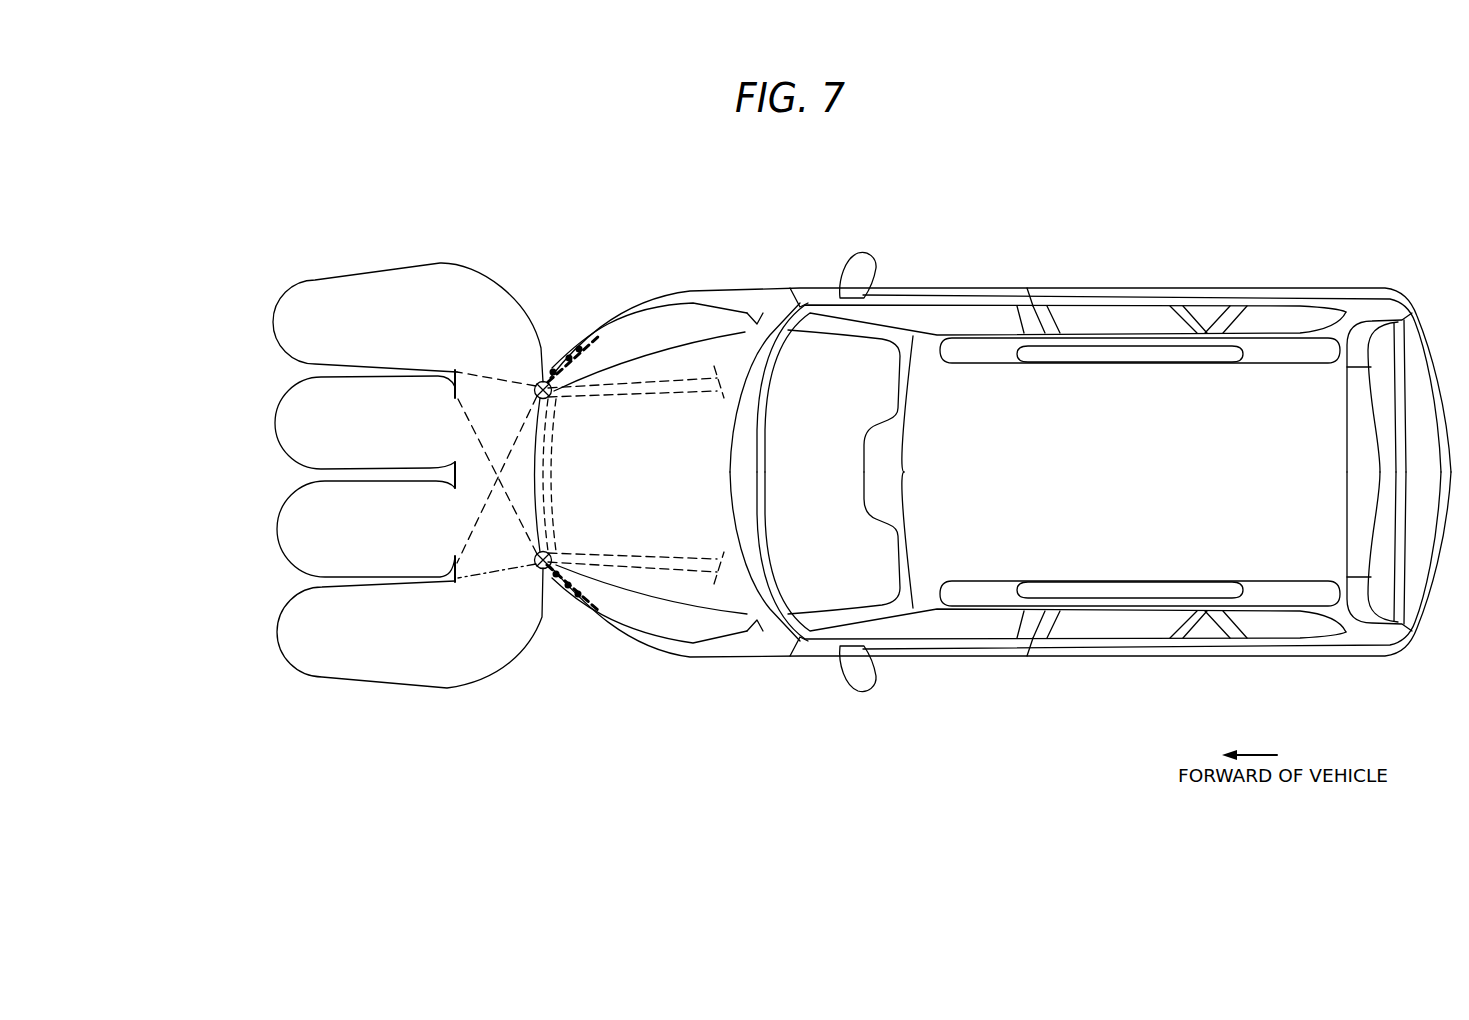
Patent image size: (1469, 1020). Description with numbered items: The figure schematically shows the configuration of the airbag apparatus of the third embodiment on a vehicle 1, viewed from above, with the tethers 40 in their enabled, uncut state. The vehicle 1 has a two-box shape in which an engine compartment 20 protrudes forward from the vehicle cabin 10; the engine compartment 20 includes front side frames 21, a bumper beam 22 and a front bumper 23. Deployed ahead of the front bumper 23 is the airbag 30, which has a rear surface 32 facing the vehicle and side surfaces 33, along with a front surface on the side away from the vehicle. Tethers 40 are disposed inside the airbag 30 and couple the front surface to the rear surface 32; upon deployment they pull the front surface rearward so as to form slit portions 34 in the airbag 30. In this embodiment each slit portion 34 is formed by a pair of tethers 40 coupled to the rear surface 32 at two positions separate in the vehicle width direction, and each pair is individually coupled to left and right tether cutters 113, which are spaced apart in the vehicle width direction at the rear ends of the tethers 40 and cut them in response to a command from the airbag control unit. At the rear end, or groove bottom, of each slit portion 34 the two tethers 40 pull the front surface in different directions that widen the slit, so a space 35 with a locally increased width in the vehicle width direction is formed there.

The vehicle 1 is at (1363, 270).
The vehicle cabin 10 is at (1101, 275).
The engine compartment 20 is at (671, 278).
The front side frames 21 is at (695, 378).
The bumper beam 22 is at (580, 348).
The front bumper 23 is at (539, 383).
The airbag 30 is at (246, 254).
The rear surface 32 is at (545, 618).
The side surfaces 33 is at (367, 272).
The slit portions 34 is at (297, 376).
The space 35 is at (450, 384).
The tethers 40 is at (502, 587).
The tether cutters 113 is at (550, 566).